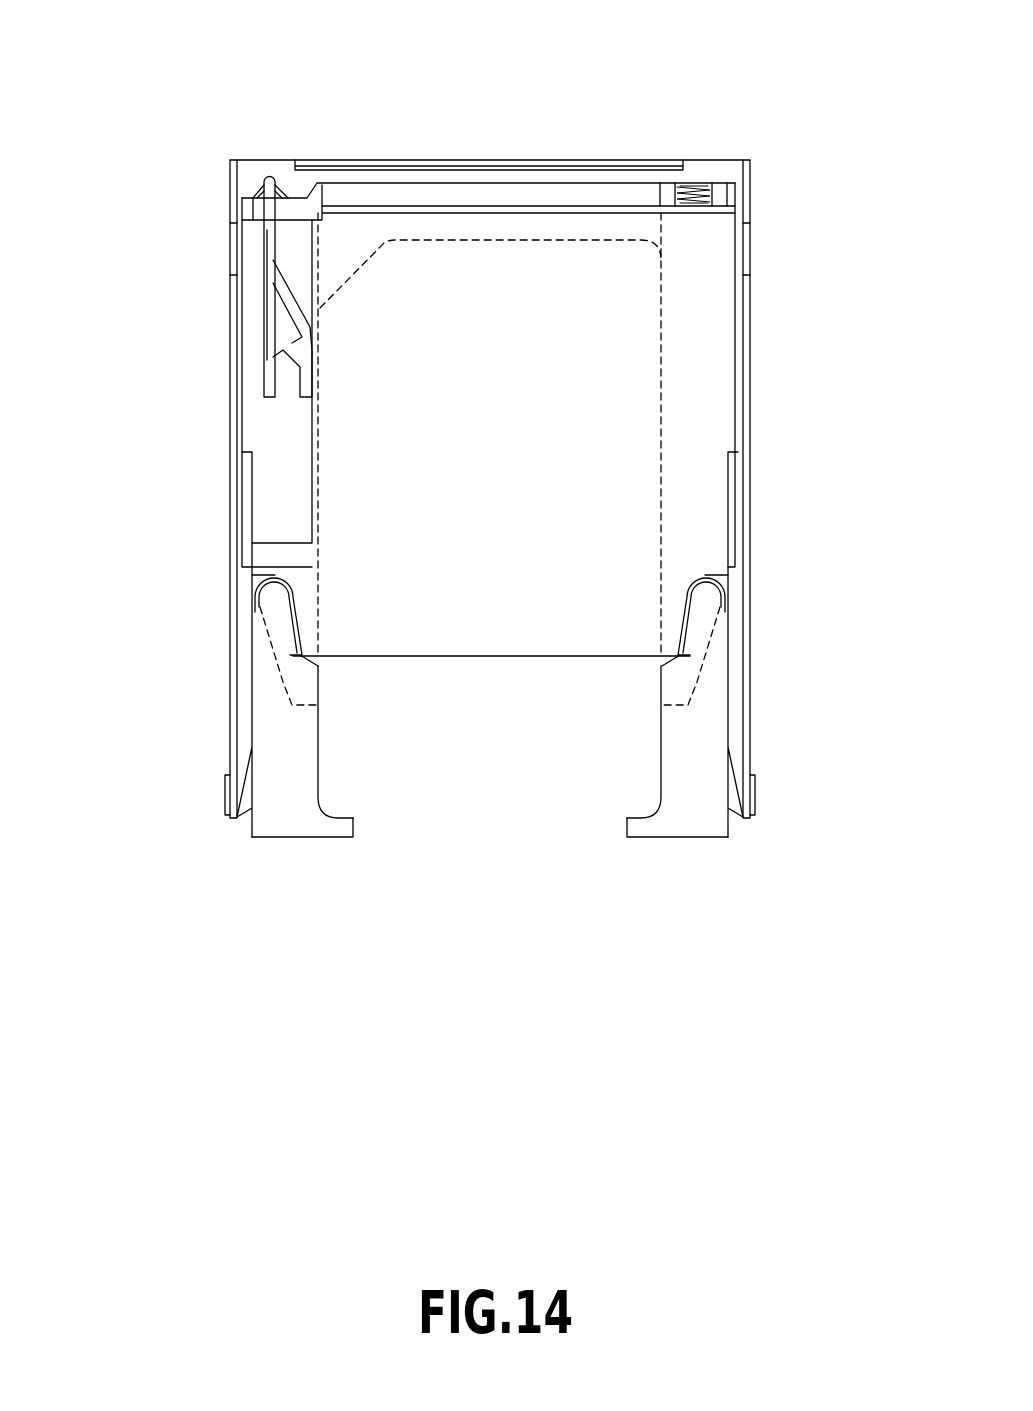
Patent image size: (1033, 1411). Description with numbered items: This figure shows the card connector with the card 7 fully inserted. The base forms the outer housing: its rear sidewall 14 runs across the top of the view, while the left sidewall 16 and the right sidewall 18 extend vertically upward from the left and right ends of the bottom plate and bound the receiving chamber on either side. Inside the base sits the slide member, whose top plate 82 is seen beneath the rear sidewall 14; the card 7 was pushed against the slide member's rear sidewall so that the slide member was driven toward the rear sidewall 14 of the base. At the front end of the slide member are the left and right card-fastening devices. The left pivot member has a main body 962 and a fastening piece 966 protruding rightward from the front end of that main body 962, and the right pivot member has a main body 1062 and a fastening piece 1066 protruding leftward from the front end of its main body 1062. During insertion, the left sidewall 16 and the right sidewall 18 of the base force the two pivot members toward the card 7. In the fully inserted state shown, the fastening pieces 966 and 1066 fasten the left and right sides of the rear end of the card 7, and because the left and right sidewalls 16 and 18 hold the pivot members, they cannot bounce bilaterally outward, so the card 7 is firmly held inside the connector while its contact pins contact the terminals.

The rear sidewall 14 is at (468, 173).
The top plate 82 is at (700, 347).
The left sidewall 16 is at (245, 635).
The right sidewall 18 is at (732, 630).
The main body 962 is at (293, 765).
The main body 1062 is at (690, 755).
The fastening piece 966 is at (342, 830).
The fastening piece 1066 is at (662, 830).
The card 7 is at (520, 710).